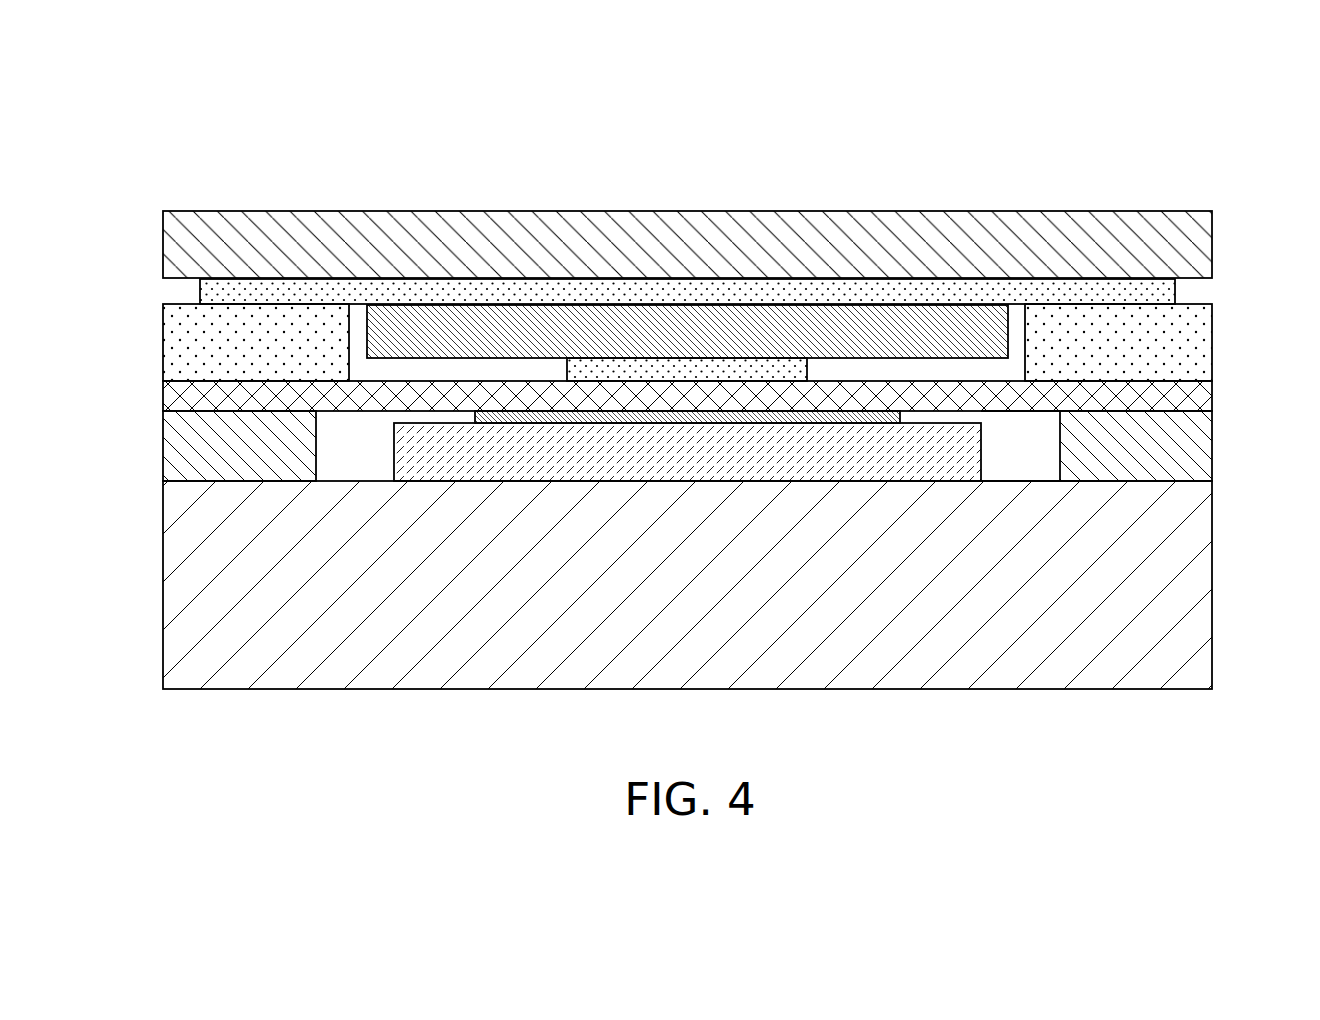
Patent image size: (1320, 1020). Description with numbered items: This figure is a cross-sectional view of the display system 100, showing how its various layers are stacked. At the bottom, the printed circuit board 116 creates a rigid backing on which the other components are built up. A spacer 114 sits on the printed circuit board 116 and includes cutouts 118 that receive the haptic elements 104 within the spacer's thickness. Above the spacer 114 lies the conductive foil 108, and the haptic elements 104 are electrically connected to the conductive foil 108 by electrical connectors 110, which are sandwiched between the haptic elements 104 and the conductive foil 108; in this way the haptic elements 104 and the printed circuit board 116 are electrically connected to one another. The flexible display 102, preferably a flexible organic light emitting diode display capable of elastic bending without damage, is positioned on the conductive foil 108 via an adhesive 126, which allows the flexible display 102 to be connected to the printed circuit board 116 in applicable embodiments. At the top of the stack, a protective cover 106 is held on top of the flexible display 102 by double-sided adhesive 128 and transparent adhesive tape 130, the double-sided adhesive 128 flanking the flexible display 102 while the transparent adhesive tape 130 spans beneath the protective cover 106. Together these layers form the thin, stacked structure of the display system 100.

The display system 100 is at (139, 102).
The flexible display 102 is at (401, 333).
The haptic elements 104 is at (923, 458).
The protective cover 106 is at (1100, 211).
The conductive foil 108 is at (1180, 399).
The electrical connectors 110 is at (520, 417).
The spacer 114 is at (1180, 445).
The printed circuit board 116 is at (1187, 584).
The cutouts 118 is at (1013, 456).
The adhesive 126 is at (713, 370).
The double-sided adhesive 128 is at (1170, 344).
The transparent adhesive tape 130 is at (1153, 293).